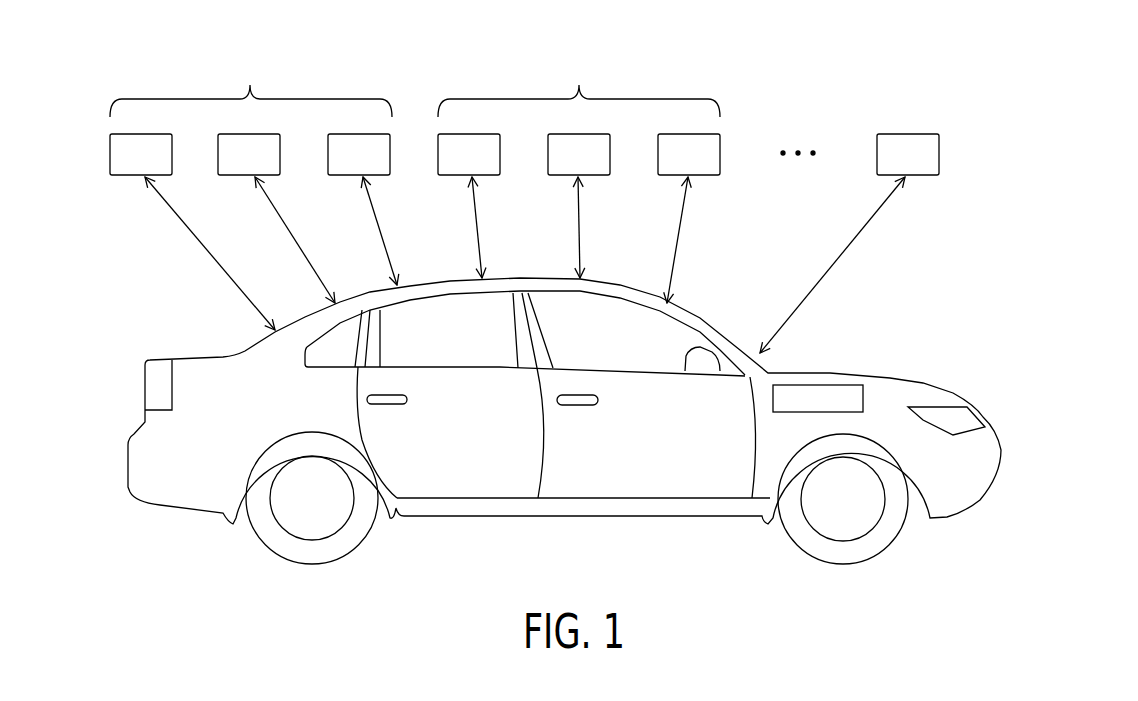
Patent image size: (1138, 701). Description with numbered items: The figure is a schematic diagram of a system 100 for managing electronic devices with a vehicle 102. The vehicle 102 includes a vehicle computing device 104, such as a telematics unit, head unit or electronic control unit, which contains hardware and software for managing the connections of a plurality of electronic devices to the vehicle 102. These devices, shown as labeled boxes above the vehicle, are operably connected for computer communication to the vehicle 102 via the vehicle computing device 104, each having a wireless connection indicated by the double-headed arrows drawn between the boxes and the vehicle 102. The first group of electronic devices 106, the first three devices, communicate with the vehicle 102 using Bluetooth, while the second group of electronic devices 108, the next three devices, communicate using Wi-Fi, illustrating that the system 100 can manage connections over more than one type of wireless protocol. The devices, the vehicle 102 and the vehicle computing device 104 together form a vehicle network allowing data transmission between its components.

The system 100 is at (1026, 61).
The vehicle 102 is at (720, 333).
The vehicle computing device 104 is at (870, 398).
The electronic devices 106 is at (250, 85).
The electronic devices 108 is at (579, 85).